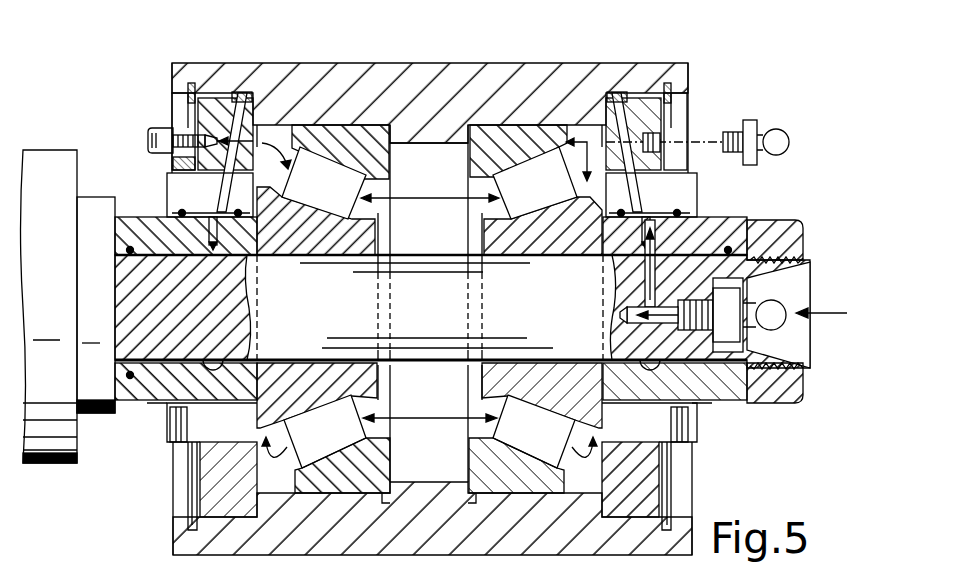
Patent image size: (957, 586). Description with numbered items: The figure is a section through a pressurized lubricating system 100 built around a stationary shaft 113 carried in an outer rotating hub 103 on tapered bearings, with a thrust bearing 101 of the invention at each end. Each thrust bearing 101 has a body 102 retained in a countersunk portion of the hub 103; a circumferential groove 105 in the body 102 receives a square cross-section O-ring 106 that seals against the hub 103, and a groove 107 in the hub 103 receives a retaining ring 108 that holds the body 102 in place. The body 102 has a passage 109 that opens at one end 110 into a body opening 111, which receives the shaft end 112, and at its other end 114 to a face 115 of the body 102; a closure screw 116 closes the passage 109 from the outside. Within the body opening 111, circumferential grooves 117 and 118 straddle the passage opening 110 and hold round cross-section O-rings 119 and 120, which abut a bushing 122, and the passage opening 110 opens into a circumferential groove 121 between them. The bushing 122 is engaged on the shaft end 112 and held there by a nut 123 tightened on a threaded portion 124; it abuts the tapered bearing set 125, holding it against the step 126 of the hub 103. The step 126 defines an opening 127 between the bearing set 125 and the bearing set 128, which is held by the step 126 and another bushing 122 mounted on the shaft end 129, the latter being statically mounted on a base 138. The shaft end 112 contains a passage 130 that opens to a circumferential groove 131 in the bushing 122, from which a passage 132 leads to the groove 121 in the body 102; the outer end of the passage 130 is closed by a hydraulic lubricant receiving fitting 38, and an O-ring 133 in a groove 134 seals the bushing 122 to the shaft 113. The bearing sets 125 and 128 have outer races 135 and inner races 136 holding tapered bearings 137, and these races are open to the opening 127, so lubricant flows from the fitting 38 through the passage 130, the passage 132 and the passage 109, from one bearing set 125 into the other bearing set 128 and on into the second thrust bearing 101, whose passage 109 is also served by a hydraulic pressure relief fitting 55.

The hydraulic lubricant receiving fitting 38 is at (810, 330).
The hydraulic pressure relief fitting 55 is at (150, 134).
The pressurized lubricating system 100 is at (690, 72).
The thrust bearing 101 is at (167, 437).
The body 102 is at (200, 500).
The hub 103 is at (413, 95).
The circumferential groove 105 is at (215, 70).
The square cross-section O-ring 106 is at (240, 92).
The groove 107 is at (195, 82).
The retaining ring 108 is at (188, 96).
The passage 109 is at (173, 166).
The passage opening 110 is at (176, 259).
The body opening 111 is at (150, 405).
The shaft end 112 is at (670, 285).
The shaft 113 is at (416, 318).
The other end of the passage 114 is at (318, 132).
The face 115 is at (256, 101).
The closure screw 116 is at (667, 136).
The circumferential groove 117 is at (433, 426).
The circumferential groove 118 is at (246, 412).
The round cross-section O-ring 119 is at (182, 210).
The round cross-section O-ring 120 is at (238, 210).
The circumferential groove 121 is at (430, 468).
The bushing 122 is at (138, 217).
The nut 123 is at (804, 391).
The threaded portion 124 is at (805, 262).
The tapered bearing set 125 is at (523, 494).
The step 126 is at (393, 142).
The opening 127 is at (302, 117).
The bearing set 128 is at (323, 494).
The shaft end 129 is at (130, 334).
The passage 130 is at (645, 277).
The circumferential groove 131 is at (213, 360).
The passage 132 is at (258, 235).
The O-ring 133 is at (128, 249).
The groove 134 is at (128, 375).
The outer races 135 is at (382, 503).
The inner races 136 is at (258, 345).
The tapered bearings 137 is at (308, 199).
The base 138 is at (95, 195).